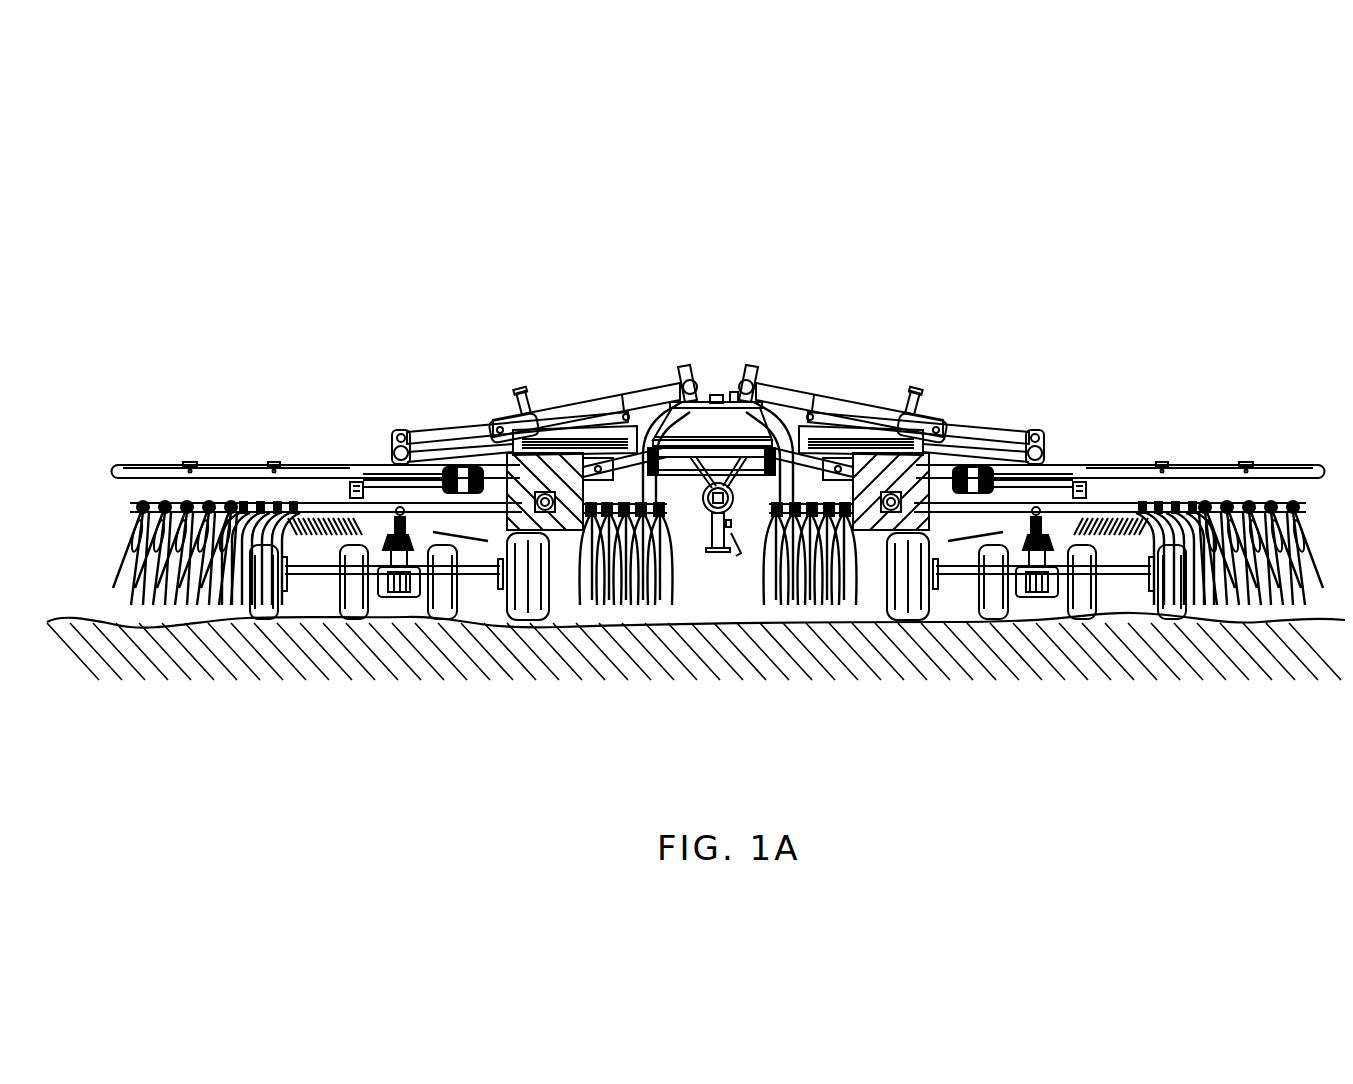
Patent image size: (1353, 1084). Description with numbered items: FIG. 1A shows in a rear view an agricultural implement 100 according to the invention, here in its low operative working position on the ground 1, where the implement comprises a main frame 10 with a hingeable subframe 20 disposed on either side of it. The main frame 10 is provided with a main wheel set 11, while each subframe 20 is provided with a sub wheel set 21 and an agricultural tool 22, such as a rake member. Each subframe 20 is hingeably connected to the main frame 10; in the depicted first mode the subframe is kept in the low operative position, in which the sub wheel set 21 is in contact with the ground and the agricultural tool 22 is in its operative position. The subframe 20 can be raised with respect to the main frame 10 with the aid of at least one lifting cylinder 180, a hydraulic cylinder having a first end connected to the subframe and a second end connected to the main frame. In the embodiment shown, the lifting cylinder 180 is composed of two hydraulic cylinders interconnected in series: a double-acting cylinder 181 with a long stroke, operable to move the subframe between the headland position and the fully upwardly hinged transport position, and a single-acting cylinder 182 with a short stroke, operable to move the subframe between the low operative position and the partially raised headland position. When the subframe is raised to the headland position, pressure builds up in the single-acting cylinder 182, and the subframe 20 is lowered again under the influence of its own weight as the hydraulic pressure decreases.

The agricultural field / system 1 is at (303, 253).
The agricultural implement (rake) 100 is at (665, 378).
The main frame 10 is at (715, 467).
The main wheel set 11 is at (513, 622).
The hingeable subframe 20 is at (224, 466).
The sub wheel set 21 is at (355, 607).
The agricultural tool 22 is at (193, 603).
The lifting cylinder 180 is at (718, 360).
The double-acting cylinder 181 is at (643, 397).
The single-acting cylinder 182 is at (517, 418).